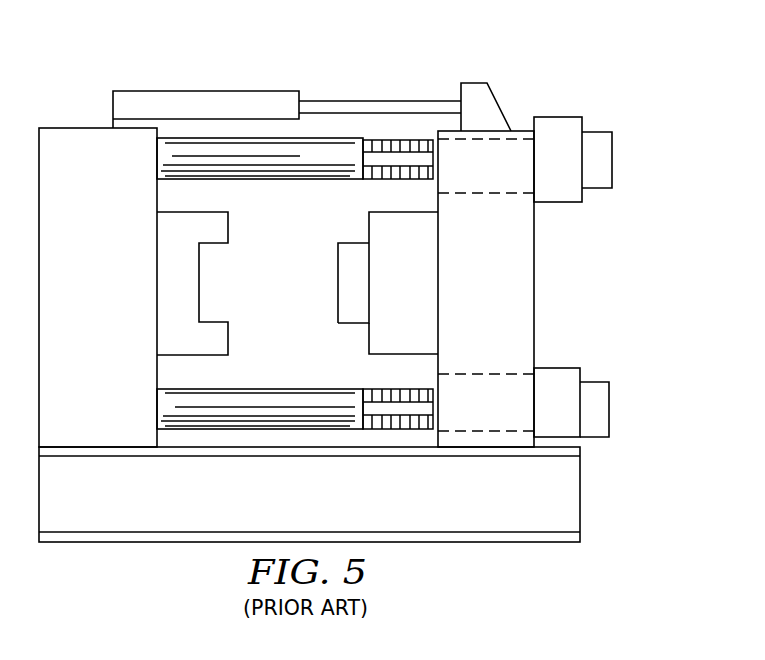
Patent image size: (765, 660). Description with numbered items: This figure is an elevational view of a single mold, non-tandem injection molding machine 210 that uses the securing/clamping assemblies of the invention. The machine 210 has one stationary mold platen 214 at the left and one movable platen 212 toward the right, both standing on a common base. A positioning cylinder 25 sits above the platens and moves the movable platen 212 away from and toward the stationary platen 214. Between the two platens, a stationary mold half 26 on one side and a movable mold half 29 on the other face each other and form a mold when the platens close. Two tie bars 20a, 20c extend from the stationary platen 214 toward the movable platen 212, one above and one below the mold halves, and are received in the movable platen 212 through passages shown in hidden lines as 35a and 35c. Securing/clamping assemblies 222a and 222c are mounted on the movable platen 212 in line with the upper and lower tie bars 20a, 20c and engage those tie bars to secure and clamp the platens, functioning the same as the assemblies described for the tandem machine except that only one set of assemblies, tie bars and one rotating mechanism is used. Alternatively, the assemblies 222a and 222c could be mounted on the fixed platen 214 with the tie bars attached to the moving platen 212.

The single mold injection molding machine 210 is at (402, 62).
The positioning cylinder 25 is at (196, 98).
The tie bar 20a is at (345, 145).
The tie bar 20c is at (262, 420).
The movable mold half 29 is at (217, 234).
The first stationary mold half 26 is at (382, 337).
The stationary mold platen 214 is at (108, 301).
The movable platen 212 is at (493, 299).
The upper hidden passage 35a is at (486, 195).
The lower hidden passage 35c is at (505, 373).
The securing/clamping assembly 222a is at (567, 120).
The securing/clamping assembly 222c is at (557, 375).